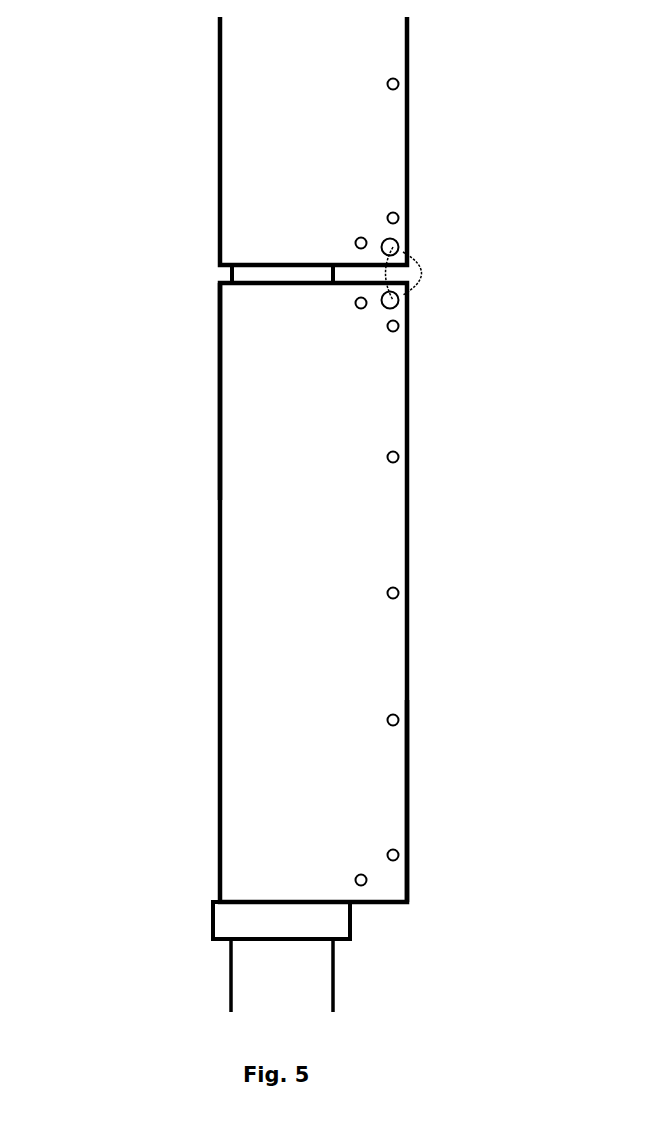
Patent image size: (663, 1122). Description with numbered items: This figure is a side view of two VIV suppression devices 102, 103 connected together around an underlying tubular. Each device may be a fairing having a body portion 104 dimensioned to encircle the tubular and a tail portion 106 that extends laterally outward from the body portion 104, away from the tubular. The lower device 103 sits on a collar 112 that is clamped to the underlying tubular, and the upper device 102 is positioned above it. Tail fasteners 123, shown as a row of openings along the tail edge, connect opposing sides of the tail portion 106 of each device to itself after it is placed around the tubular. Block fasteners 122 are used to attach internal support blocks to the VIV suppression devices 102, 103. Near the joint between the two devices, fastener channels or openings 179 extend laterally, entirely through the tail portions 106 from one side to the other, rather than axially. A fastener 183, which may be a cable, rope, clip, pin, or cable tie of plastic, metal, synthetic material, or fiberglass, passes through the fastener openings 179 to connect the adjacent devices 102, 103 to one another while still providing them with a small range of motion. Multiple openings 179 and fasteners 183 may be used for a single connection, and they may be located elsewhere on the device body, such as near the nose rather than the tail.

The VIV suppression device 102 is at (216, 150).
The VIV suppression device 103 is at (214, 543).
The body portion 104 is at (217, 392).
The tail portion 106 is at (411, 867).
The collar 112 is at (206, 916).
The block fasteners 122 is at (351, 242).
The tail fasteners 123 is at (404, 93).
The fastener openings 179 is at (407, 238).
The fastener 183 is at (430, 270).